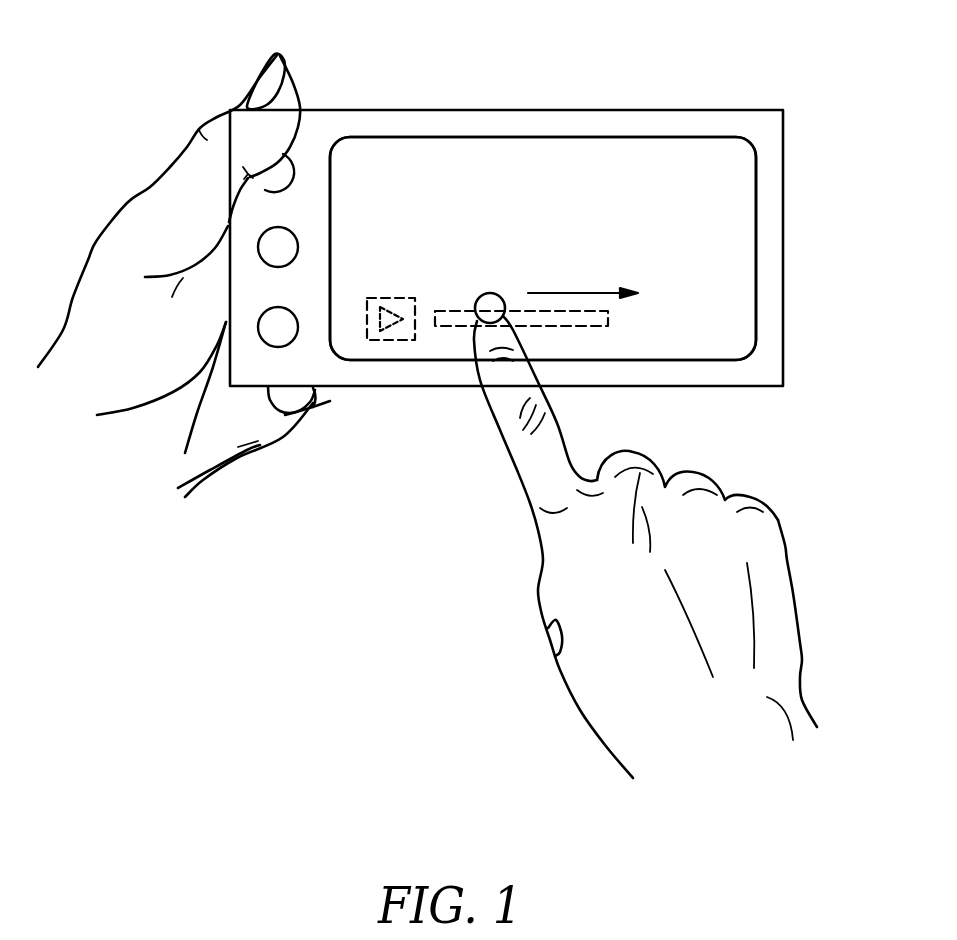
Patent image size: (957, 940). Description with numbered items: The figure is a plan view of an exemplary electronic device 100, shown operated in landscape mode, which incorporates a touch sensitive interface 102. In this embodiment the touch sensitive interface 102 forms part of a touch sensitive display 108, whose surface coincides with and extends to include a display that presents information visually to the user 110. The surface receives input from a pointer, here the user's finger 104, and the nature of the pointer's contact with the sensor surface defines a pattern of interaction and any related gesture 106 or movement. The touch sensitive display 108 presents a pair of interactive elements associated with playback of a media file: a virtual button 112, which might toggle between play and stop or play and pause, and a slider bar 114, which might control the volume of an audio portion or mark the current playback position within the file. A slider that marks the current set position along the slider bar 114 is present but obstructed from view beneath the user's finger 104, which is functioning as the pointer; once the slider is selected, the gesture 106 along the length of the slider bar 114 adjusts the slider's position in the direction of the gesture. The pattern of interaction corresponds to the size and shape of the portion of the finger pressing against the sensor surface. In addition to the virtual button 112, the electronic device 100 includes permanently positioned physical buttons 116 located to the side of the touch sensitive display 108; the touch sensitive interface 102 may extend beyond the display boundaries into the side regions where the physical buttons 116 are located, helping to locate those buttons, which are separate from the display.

The electronic device 100 is at (790, 74).
The touch sensitive interface 102 is at (747, 190).
The user's finger 104 is at (491, 292).
The gesture 106 is at (570, 291).
The touch sensitive display 108 is at (747, 245).
The user 110 is at (782, 598).
The virtual button 112 is at (393, 307).
The slider bar 114 is at (610, 320).
The physical buttons 116 is at (278, 180).